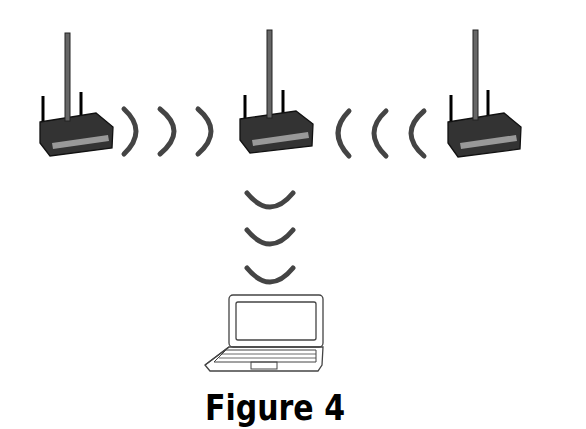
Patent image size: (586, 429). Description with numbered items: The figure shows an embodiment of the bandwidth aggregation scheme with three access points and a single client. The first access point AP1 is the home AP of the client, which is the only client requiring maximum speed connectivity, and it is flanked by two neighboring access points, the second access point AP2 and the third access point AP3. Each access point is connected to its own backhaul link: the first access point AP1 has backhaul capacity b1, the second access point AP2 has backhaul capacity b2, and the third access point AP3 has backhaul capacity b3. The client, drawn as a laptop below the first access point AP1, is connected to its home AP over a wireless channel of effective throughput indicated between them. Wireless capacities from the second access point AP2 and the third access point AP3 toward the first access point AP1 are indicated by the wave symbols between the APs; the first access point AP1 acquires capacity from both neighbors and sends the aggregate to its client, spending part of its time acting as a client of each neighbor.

The first access point AP1 is at (276, 134).
The second access point AP2 is at (76, 153).
The third access point AP3 is at (484, 149).
The backhaul capacity of AP1 b1 is at (289, 74).
The backhaul capacity of AP2 b2 is at (88, 77).
The backhaul capacity of AP3 b3 is at (496, 75).